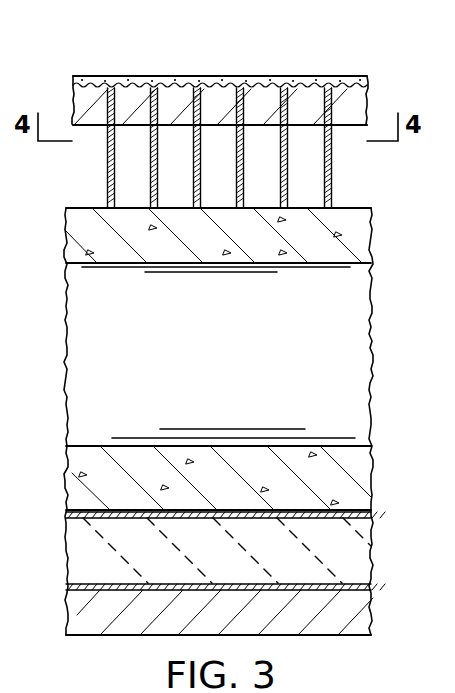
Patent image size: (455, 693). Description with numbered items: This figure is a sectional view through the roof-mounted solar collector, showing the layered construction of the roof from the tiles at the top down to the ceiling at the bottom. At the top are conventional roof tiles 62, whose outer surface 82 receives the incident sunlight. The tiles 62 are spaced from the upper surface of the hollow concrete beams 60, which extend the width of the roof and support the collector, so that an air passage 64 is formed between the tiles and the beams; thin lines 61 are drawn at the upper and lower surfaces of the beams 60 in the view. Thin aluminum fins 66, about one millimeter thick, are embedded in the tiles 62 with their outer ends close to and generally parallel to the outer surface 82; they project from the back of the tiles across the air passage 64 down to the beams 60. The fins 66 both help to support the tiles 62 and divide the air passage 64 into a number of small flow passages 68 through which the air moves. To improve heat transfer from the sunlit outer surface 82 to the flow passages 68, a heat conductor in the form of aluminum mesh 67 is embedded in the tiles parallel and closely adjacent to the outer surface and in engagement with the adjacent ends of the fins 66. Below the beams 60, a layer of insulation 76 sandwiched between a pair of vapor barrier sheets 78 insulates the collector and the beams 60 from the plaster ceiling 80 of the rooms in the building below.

The hollow concrete beams 60 is at (353, 250).
The conductor lines 61 is at (372, 268).
The roof tiles 62 is at (357, 110).
The air passage 64 is at (342, 183).
The aluminum fins 66 is at (150, 167).
The aluminum mesh 67 is at (231, 85).
The flow passages 68 is at (268, 150).
The insulation 76 is at (227, 566).
The vapor barrier sheets 78 is at (364, 585).
The plaster ceiling 80 is at (313, 636).
The outer surface 82 is at (131, 76).